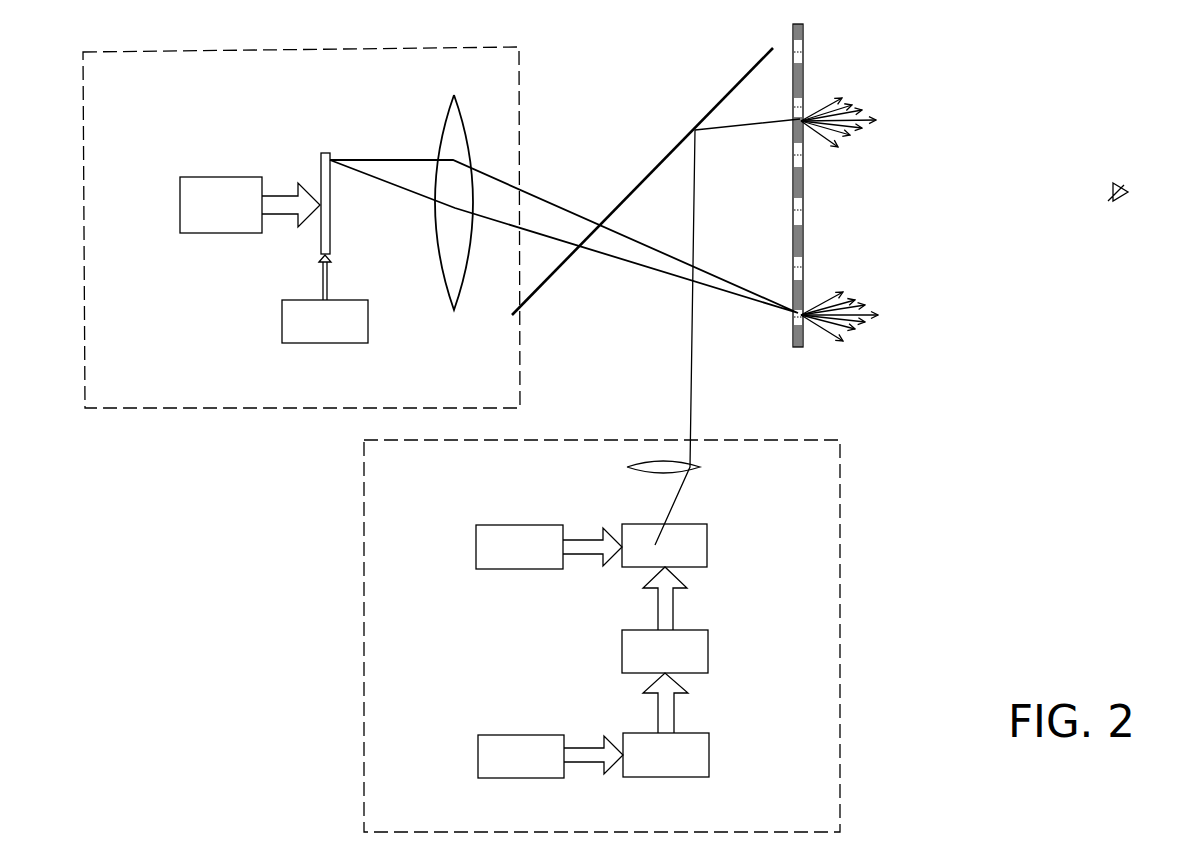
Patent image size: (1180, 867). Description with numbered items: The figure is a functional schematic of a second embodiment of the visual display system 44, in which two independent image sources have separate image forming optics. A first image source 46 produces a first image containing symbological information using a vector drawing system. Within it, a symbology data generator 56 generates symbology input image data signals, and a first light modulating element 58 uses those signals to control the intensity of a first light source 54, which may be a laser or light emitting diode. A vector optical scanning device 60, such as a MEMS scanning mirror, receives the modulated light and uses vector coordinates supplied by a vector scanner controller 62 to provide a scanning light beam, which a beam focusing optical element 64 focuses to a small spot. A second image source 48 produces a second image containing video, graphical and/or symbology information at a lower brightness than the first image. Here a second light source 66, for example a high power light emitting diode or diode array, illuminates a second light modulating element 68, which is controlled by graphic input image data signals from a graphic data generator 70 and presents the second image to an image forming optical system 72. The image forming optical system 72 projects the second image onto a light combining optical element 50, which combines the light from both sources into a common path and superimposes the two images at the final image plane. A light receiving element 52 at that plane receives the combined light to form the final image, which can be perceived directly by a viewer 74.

The visual display system 44 is at (953, 515).
The first image source 46 is at (364, 684).
The second image source 48 is at (194, 408).
The light combining optical element 50 is at (708, 113).
The light receiving element 52 is at (805, 348).
The first light source 54 is at (709, 650).
The symbology data generator 56 is at (478, 755).
The first light modulating element 58 is at (710, 752).
The vector optical scanning device 60 is at (708, 546).
The vector scanner controller 62 is at (476, 555).
The beam focusing optical element 64 is at (625, 468).
The second light source 66 is at (207, 177).
The second light modulating element 68 is at (325, 152).
The graphic data generator 70 is at (282, 325).
The image forming optical system 72 is at (455, 310).
The viewer 74 is at (1120, 200).